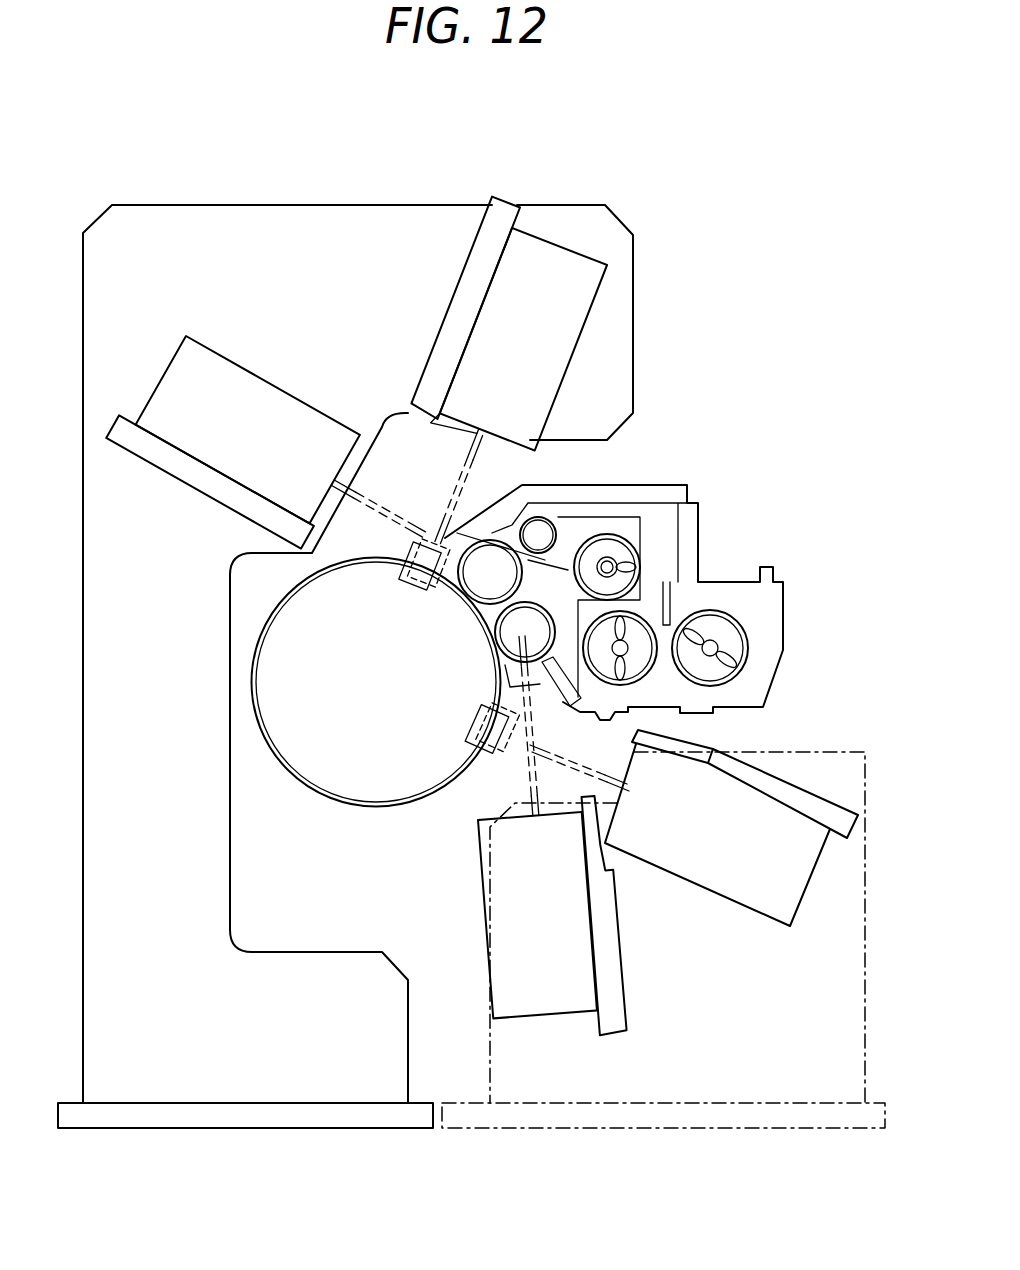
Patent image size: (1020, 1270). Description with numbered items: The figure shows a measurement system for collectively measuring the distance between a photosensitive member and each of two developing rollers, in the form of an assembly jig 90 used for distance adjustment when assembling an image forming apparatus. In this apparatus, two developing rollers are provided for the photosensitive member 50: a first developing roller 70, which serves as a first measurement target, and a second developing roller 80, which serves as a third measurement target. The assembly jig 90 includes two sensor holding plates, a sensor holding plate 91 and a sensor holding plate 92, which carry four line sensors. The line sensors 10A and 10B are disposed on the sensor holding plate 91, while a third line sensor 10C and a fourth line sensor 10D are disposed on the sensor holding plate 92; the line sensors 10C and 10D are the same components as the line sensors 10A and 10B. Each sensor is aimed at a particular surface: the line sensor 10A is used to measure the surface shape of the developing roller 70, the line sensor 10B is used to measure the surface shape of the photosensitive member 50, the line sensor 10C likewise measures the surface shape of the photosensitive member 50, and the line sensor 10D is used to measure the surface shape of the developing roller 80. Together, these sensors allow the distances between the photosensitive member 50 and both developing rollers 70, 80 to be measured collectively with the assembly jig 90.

The assembly jig 90 is at (146, 172).
The sensor holding plate 91 is at (250, 218).
The sensor holding plate 92 is at (847, 750).
The photosensitive member 50 is at (318, 797).
The developing roller 70 is at (466, 600).
The developing roller 80 is at (496, 628).
The line sensor 10A is at (268, 380).
The line sensor 10B is at (556, 236).
The line sensor 10C is at (757, 920).
The line sensor 10D is at (482, 875).